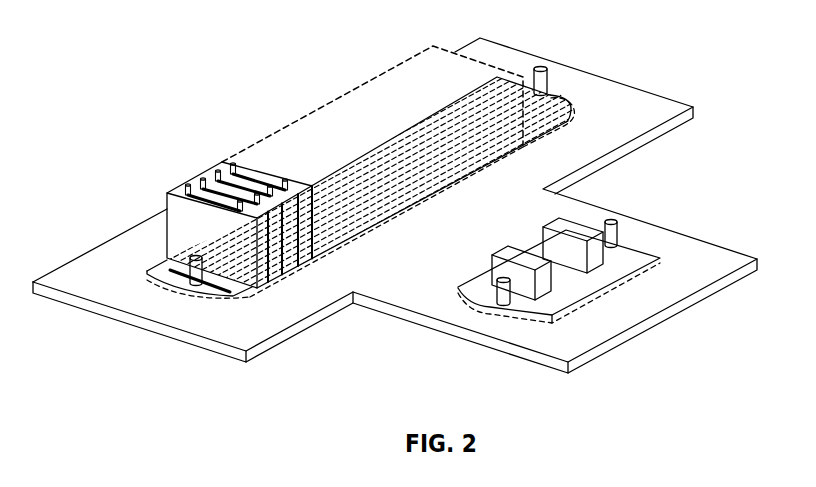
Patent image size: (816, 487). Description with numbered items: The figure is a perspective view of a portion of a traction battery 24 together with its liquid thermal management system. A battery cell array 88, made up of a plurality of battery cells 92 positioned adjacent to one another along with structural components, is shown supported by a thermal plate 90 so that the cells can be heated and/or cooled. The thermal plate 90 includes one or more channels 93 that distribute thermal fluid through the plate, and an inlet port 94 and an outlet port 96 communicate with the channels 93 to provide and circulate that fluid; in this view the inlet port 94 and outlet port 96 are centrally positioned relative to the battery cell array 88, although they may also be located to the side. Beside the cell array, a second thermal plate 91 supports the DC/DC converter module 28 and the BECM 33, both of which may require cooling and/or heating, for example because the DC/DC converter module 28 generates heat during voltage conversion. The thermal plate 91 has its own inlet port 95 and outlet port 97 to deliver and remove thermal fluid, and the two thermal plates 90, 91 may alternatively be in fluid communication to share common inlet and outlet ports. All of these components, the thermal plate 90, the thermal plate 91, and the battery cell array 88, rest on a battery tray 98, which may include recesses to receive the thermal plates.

The traction battery 24 is at (276, 100).
The DC/DC converter module 28 is at (512, 252).
The BECM 33 is at (565, 223).
The battery cell array 88 is at (376, 74).
The thermal plate 90 is at (253, 294).
The thermal plate 91 is at (575, 288).
The battery cells 92 is at (231, 171).
The channels 93 is at (366, 212).
The inlet port 94 is at (548, 92).
The inlet port 95 is at (612, 220).
The outlet port 96 is at (203, 272).
The outlet port 97 is at (503, 287).
The battery tray 98 is at (667, 105).